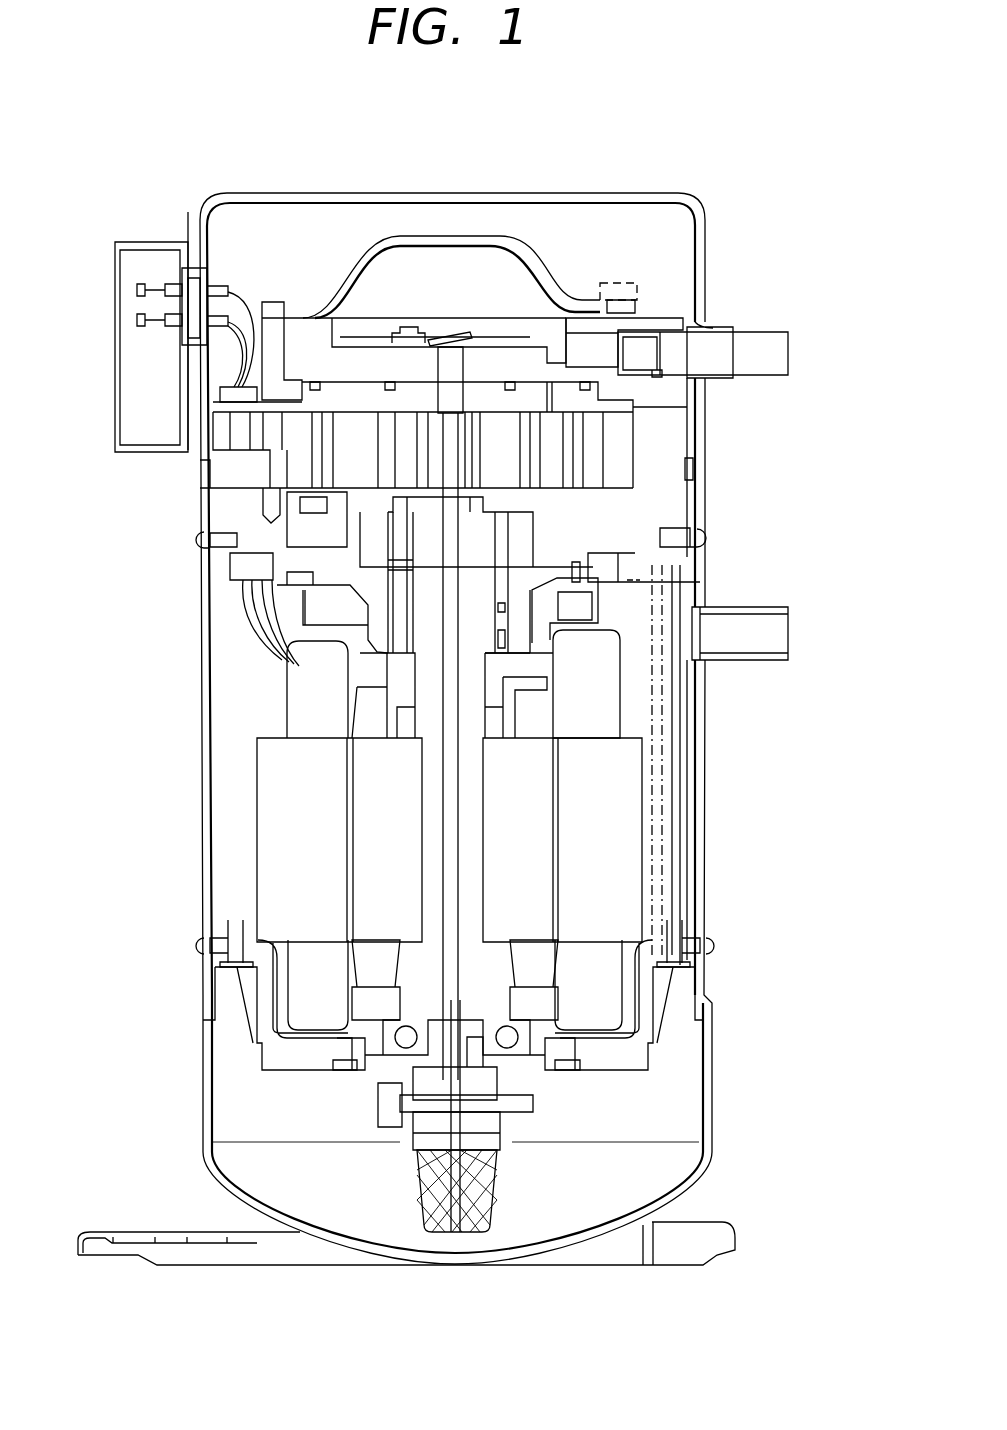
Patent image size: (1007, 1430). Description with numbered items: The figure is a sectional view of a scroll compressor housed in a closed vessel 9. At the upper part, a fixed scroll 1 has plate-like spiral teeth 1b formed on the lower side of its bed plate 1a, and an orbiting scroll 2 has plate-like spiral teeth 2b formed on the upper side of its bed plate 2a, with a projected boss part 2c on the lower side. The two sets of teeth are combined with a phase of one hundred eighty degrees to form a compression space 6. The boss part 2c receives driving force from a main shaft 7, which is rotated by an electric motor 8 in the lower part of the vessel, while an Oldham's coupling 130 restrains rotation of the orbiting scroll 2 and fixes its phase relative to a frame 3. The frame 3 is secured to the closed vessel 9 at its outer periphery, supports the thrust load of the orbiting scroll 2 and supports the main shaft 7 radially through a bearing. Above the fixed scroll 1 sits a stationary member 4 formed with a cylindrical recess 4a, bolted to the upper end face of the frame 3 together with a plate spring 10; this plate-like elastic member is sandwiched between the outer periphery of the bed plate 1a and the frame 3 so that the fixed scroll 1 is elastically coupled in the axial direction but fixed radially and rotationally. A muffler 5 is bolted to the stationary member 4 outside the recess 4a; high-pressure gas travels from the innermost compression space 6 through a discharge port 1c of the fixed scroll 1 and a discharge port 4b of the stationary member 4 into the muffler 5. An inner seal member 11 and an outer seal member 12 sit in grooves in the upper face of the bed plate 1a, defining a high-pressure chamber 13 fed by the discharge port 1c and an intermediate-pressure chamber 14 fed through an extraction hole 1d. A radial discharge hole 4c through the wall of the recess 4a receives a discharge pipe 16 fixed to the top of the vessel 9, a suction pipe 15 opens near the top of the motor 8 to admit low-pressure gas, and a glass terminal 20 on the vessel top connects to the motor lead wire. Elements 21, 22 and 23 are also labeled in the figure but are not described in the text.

The fixed scroll 1 is at (627, 425).
The bed plate 1a is at (480, 387).
The plate-like spiral teeth 1b is at (317, 427).
The discharge port 1c is at (448, 387).
The extraction hole 1d is at (687, 478).
The orbiting scroll 2 is at (580, 495).
The bed plate 2a is at (625, 563).
The plate-like spiral teeth 2b is at (327, 455).
The projected boss part 2c is at (545, 590).
The frame 3 is at (232, 517).
The stationary member 4 is at (292, 338).
The cylindrical recess 4a is at (371, 252).
The discharge port 4b is at (430, 340).
The discharge hole 4c is at (603, 340).
The muffler 5 is at (375, 337).
The compression space 6 is at (358, 470).
The main shaft 7 is at (470, 688).
The electric motor 8 is at (272, 873).
The closed vessel 9 is at (205, 796).
The plate spring 10 is at (672, 408).
The inner seal member 11 is at (505, 385).
The outer seal member 12 is at (580, 387).
The high-pressure chamber 13 is at (338, 380).
The intermediate-pressure chamber 14 is at (285, 332).
The suction pipe 15 is at (777, 663).
The discharge pipe 16 is at (790, 352).
The glass terminal 20 is at (172, 268).
The crankshaft 21 is at (457, 900).
The oil pump 22 is at (423, 1082).
The lubricating oil 23 is at (313, 1195).
The Oldham's coupling 130 is at (297, 515).